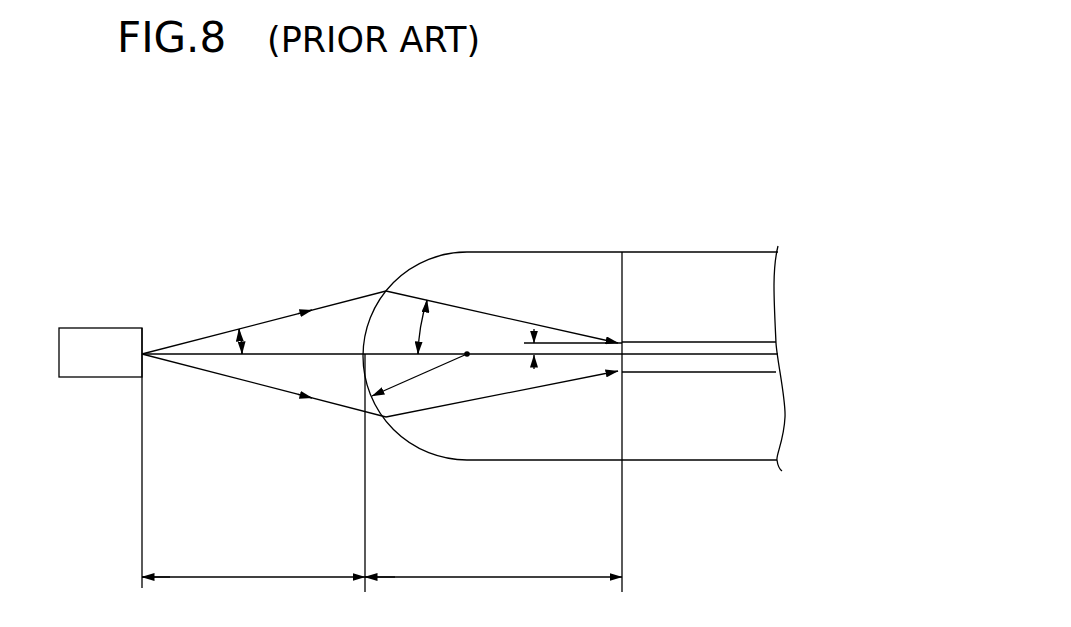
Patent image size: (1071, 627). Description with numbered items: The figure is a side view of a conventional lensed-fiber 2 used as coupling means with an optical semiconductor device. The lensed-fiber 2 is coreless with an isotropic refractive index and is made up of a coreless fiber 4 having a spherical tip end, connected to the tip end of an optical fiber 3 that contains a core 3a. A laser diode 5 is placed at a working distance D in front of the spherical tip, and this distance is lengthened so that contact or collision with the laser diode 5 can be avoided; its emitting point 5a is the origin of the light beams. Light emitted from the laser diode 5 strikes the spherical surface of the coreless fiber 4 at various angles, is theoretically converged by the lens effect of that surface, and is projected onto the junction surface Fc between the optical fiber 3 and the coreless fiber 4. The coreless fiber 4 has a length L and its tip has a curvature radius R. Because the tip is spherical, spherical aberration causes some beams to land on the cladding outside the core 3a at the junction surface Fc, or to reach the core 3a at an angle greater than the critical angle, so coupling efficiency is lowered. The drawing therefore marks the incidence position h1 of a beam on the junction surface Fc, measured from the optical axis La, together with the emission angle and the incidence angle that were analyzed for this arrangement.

The lensed-fiber 2 is at (597, 216).
The optical fiber 3 is at (705, 466).
The core 3a is at (700, 343).
The coreless fiber 4 is at (497, 450).
The laser diode 5 is at (88, 380).
The light emitting point 5a is at (148, 338).
The junction surface Fc is at (622, 281).
The curvature radius R is at (428, 372).
The optical axis La is at (330, 355).
The working distance D is at (253, 563).
The length of the coreless fiber L is at (493, 563).
The incidence position h1 is at (524, 343).